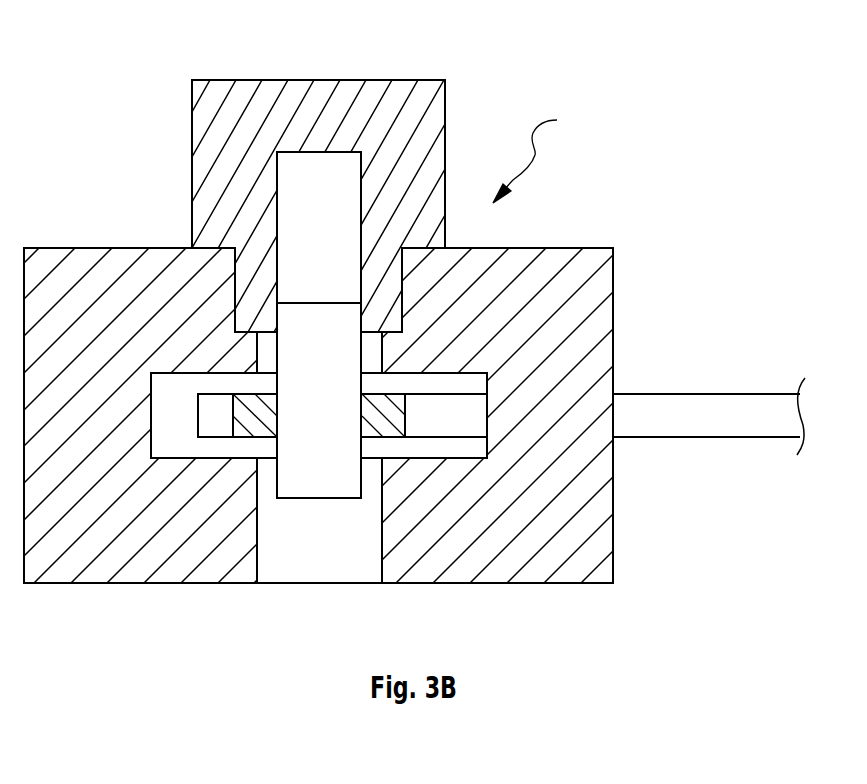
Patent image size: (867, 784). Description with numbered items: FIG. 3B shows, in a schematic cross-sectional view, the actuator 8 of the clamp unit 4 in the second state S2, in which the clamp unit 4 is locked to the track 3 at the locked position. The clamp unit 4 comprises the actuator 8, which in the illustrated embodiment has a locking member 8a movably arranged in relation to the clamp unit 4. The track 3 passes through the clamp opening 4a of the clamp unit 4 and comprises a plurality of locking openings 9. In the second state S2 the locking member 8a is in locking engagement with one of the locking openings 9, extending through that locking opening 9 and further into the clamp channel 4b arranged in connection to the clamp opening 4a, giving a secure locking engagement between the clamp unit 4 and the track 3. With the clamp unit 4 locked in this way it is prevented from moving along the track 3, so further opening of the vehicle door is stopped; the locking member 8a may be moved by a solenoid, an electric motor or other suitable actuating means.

The track 3 is at (700, 417).
The clamp unit 4 is at (93, 503).
The clamp opening 4a is at (183, 437).
The clamp channel 4b is at (340, 533).
The actuator 8 is at (385, 123).
The locking member 8a is at (322, 367).
The locking openings 9 is at (272, 448).
The second state S2 is at (569, 152).